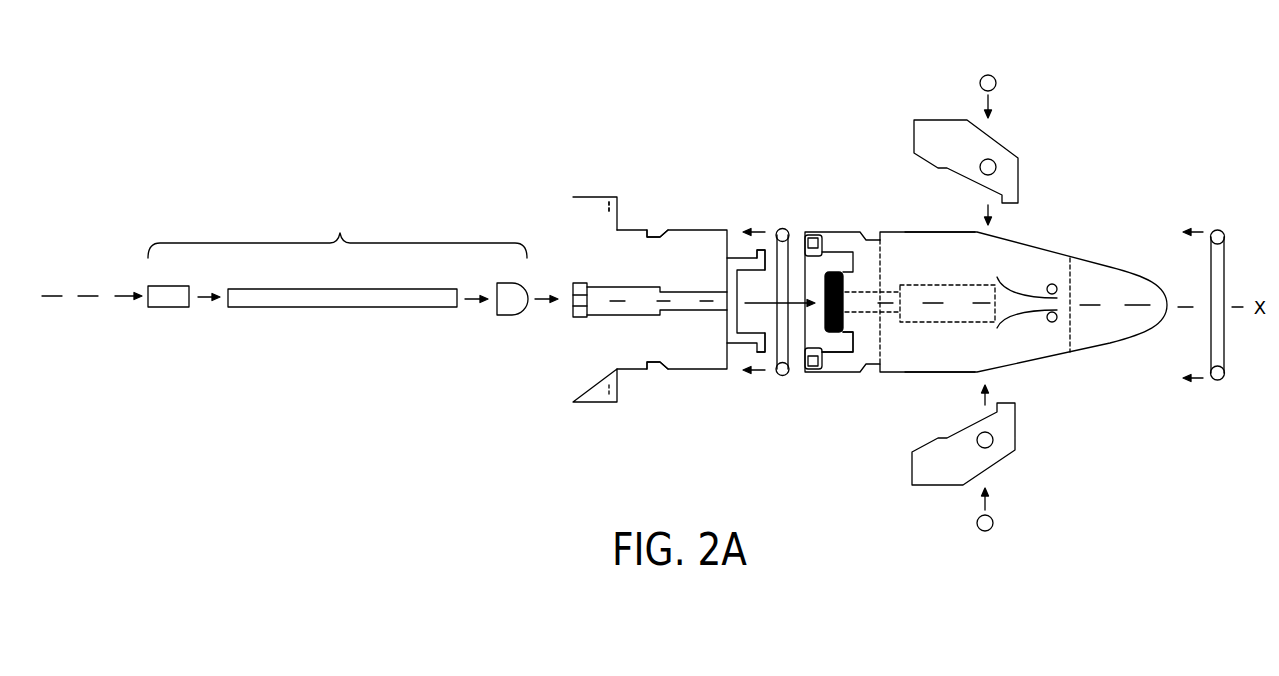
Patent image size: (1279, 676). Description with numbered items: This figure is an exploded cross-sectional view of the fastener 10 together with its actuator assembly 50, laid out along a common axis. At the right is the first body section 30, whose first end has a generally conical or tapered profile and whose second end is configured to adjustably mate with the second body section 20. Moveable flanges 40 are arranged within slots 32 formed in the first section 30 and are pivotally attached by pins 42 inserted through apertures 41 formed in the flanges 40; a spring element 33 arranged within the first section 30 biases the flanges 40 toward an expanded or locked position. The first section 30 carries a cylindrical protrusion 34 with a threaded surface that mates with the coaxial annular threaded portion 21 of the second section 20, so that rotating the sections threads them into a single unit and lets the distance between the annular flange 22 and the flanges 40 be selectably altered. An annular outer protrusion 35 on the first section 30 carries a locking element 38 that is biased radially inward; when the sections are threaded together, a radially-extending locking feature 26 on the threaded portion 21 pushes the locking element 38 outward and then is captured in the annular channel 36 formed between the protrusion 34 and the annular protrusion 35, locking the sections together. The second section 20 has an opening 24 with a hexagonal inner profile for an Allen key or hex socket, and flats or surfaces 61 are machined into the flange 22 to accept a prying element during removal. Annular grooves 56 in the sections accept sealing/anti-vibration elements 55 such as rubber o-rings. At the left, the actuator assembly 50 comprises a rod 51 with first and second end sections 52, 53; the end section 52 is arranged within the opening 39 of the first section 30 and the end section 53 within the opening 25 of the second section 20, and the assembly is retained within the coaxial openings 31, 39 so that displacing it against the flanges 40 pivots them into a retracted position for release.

The fastener 10 is at (700, 160).
The second body section 20 is at (692, 345).
The annular threaded portion 21 is at (742, 340).
The annular flange 22 is at (590, 394).
The opening 24 is at (578, 290).
The opening 25 is at (648, 292).
The locking feature 26 is at (765, 352).
The first body section 30 is at (1028, 250).
The opening 31 is at (863, 297).
The slots 32 is at (937, 226).
The spring element 33 is at (1055, 320).
The cylindrical protrusion 34 is at (828, 272).
The annular outer protrusion 35 is at (847, 235).
The annular channel 36 is at (840, 340).
The locking element 38 is at (806, 364).
The opening 39 is at (935, 303).
The flanges 40 is at (932, 125).
The apertures 41 is at (990, 158).
The pins 42 is at (992, 76).
The actuator assembly 50 is at (337, 232).
The rod 51 is at (343, 298).
The end section 52 is at (508, 302).
The end section 53 is at (165, 302).
The sealing/anti-vibration elements 55 is at (788, 235).
The annular grooves 56 is at (655, 370).
The surfaces 61 is at (617, 198).